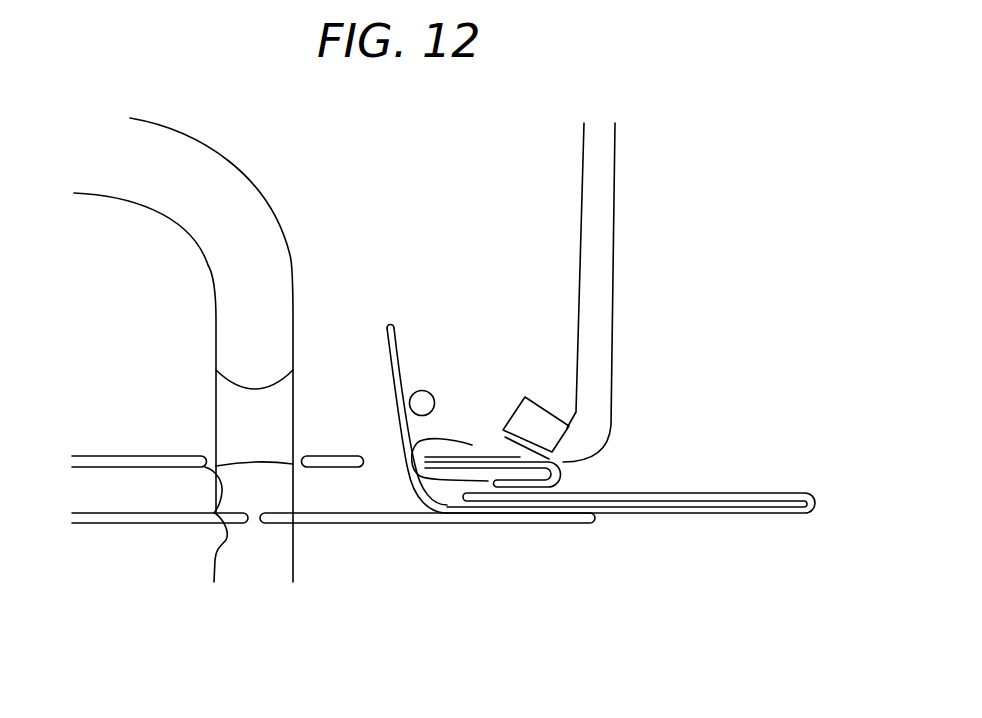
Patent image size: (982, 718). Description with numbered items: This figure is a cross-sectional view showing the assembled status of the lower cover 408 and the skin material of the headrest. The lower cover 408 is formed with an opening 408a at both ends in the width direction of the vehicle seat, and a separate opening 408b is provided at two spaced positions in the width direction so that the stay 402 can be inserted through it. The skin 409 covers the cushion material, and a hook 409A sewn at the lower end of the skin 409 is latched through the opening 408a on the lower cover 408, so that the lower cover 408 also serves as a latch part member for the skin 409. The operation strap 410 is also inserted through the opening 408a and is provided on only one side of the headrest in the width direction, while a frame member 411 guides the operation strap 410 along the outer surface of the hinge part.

The stay 402 is at (225, 160).
The lower cover 408 is at (342, 467).
The opening 408a is at (360, 467).
The opening 408b is at (215, 515).
The skin 409 is at (615, 318).
The hook 409A is at (460, 433).
The operation strap 410 is at (722, 515).
The frame member 411 is at (421, 390).